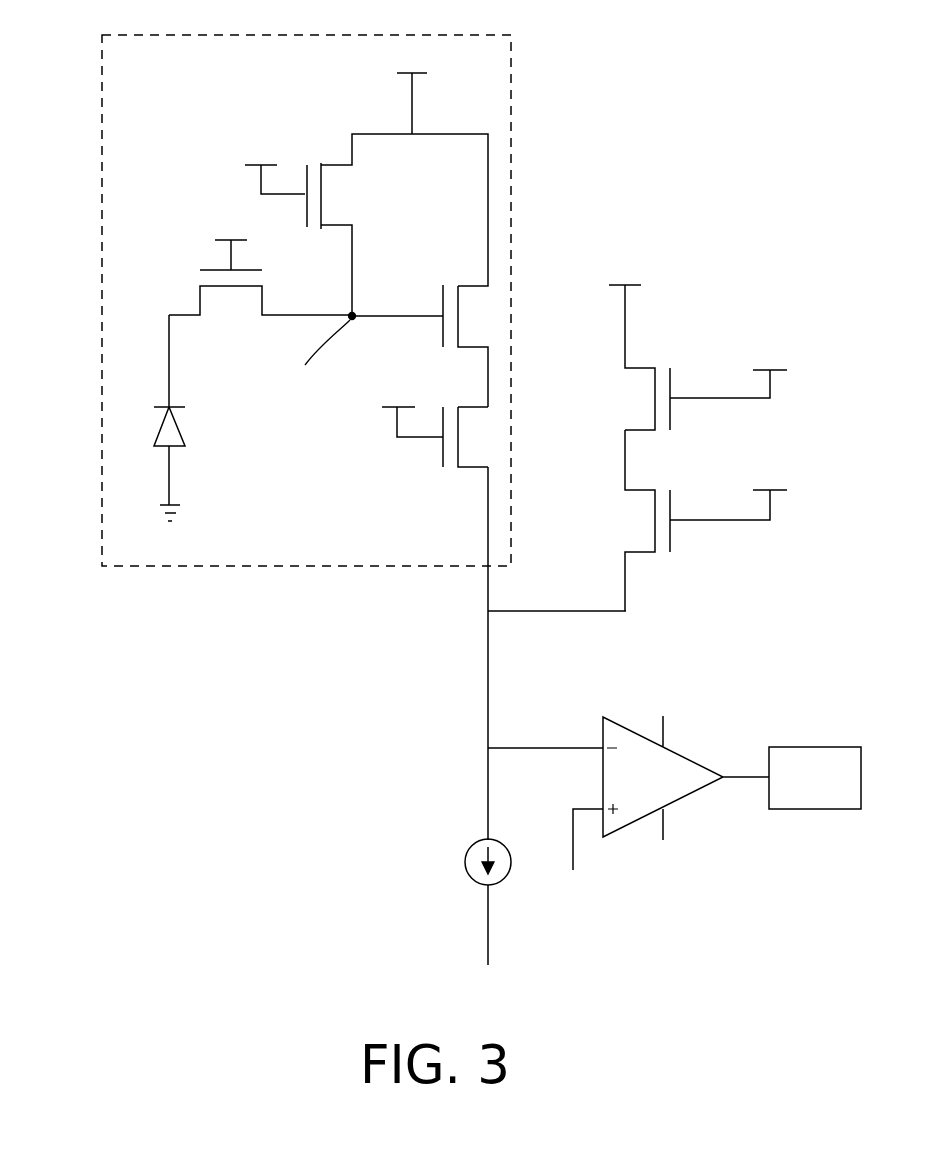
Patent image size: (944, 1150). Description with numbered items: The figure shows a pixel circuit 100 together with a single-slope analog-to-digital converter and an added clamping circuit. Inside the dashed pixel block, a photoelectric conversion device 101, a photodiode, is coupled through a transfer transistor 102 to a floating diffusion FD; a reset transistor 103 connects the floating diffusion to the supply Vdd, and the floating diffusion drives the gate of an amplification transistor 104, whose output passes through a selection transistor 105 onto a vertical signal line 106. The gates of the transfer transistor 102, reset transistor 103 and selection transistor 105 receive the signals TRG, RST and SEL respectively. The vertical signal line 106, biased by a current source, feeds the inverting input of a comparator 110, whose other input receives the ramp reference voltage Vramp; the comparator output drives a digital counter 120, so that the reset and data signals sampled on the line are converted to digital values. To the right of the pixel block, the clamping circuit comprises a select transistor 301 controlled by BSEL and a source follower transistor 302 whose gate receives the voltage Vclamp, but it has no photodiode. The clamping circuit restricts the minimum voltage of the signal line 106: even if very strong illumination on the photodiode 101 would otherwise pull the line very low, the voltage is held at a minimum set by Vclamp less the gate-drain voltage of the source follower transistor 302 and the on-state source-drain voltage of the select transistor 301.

The pixel circuit 100 is at (101, 65).
The photoelectric conversion device 101 is at (157, 432).
The transfer transistor 102 is at (200, 295).
The reset transistor 103 is at (318, 165).
The amplification transistor 104 is at (480, 285).
The selection transistor 105 is at (465, 470).
The vertical signal line 106 is at (490, 497).
The comparator 110 is at (618, 720).
The digital counter 120 is at (800, 747).
The select transistor 301 is at (642, 490).
The source follower transistor 302 is at (650, 368).